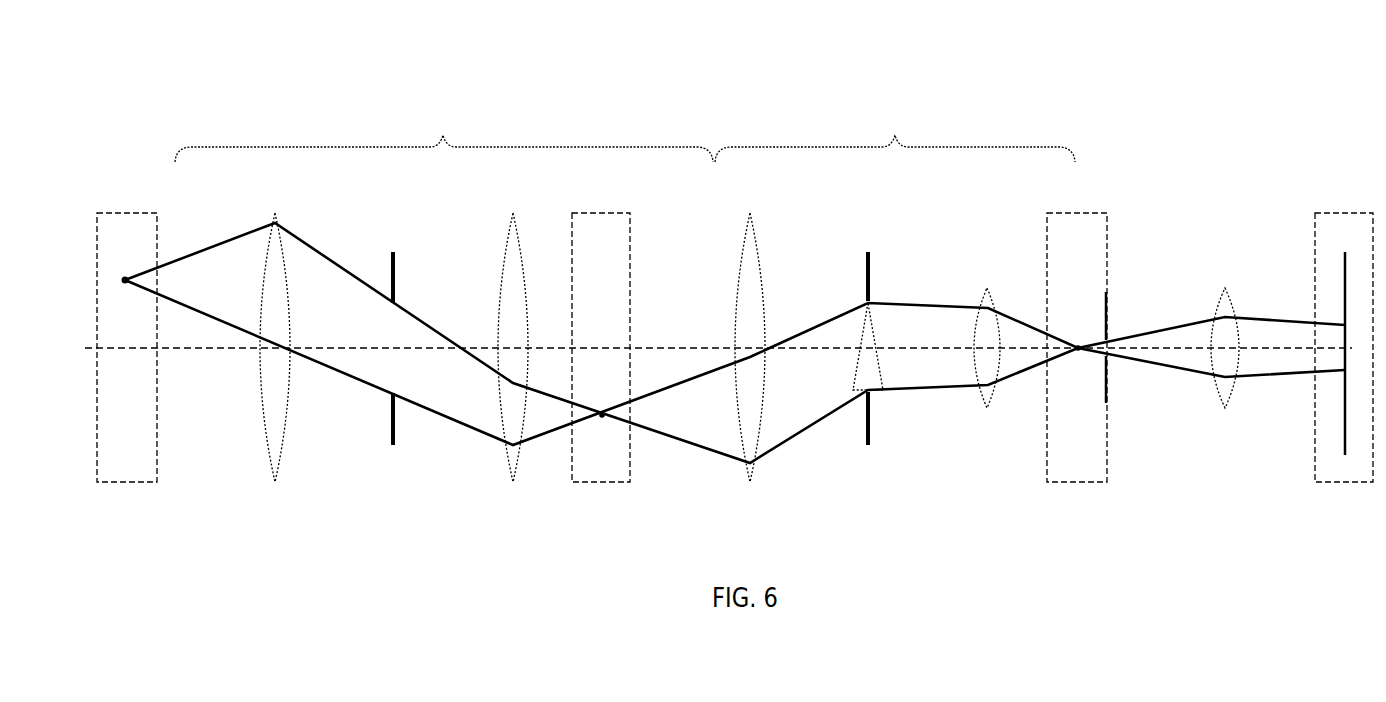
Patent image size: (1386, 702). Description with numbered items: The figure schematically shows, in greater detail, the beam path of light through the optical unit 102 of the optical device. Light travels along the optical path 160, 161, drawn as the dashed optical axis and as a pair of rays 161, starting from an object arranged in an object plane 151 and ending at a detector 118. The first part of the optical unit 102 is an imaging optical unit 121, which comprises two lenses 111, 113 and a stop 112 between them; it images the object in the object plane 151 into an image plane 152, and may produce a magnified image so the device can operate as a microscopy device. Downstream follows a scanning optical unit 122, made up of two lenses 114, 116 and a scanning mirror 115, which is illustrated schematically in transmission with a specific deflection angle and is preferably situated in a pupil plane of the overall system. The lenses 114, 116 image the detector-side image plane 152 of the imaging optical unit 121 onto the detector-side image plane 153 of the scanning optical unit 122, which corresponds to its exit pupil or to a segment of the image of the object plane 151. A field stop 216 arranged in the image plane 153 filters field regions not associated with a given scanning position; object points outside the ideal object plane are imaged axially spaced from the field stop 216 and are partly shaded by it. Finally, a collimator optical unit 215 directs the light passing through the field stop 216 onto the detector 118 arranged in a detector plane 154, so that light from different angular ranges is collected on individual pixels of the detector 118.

The optical unit 102 is at (1244, 61).
The lens 111 is at (278, 213).
The stop 112 is at (393, 252).
The lens 113 is at (516, 213).
The lens 114 is at (753, 213).
The scanning mirror 115 is at (868, 252).
The lens 116 is at (989, 288).
The detector 118 is at (1345, 252).
The imaging optical unit 121 is at (444, 135).
The scanning optical unit 122 is at (895, 134).
The object plane 151 is at (153, 213).
The image plane 152 is at (622, 213).
The image plane 153 is at (1090, 213).
The detector plane 154 is at (1322, 213).
The optical path 160 is at (183, 346).
The optical path 161 is at (222, 243).
The collimator optical unit 215 is at (1226, 288).
The field stop 216 is at (1108, 300).